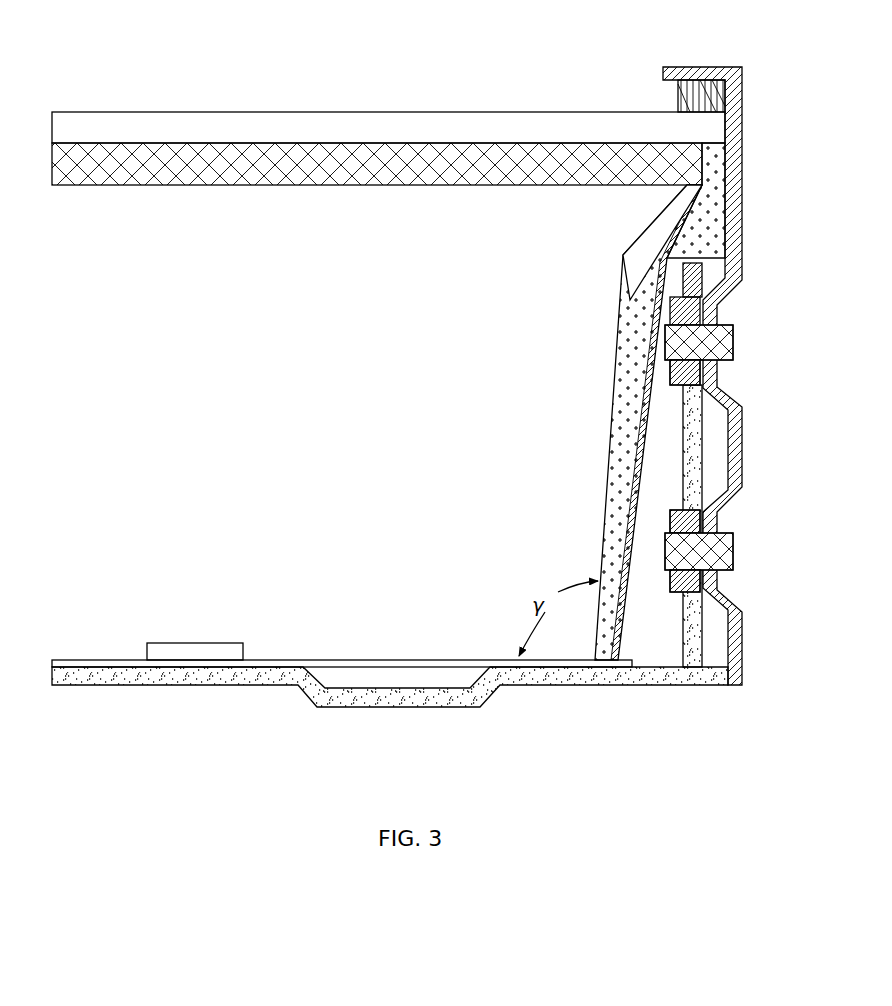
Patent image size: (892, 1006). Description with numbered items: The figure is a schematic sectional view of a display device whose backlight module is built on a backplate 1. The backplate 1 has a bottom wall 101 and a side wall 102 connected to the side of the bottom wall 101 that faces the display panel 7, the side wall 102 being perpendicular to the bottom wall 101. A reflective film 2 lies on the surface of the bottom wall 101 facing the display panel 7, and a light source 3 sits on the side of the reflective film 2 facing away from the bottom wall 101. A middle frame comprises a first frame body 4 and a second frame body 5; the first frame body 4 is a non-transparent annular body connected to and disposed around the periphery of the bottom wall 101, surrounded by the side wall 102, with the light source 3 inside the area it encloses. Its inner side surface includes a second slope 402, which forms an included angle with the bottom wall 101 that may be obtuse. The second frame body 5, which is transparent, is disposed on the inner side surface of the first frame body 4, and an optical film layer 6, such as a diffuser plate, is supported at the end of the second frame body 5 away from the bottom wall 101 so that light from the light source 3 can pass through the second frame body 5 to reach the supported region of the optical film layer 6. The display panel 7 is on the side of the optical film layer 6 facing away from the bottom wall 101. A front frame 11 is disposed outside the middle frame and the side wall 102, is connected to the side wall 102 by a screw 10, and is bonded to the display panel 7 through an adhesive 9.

The backplate 1 is at (390, 588).
The bottom wall 101 is at (540, 677).
The side wall 102 is at (683, 637).
The reflective film 2 is at (108, 660).
The light source 3 is at (185, 650).
The first frame body 4 is at (620, 401).
The second slope 402 is at (615, 443).
The second frame body 5 is at (648, 244).
The optical film layer 6 is at (52, 187).
The display panel 7 is at (376, 158).
The adhesive 9 is at (690, 100).
The screw 10 is at (720, 337).
The front frame 11 is at (740, 187).